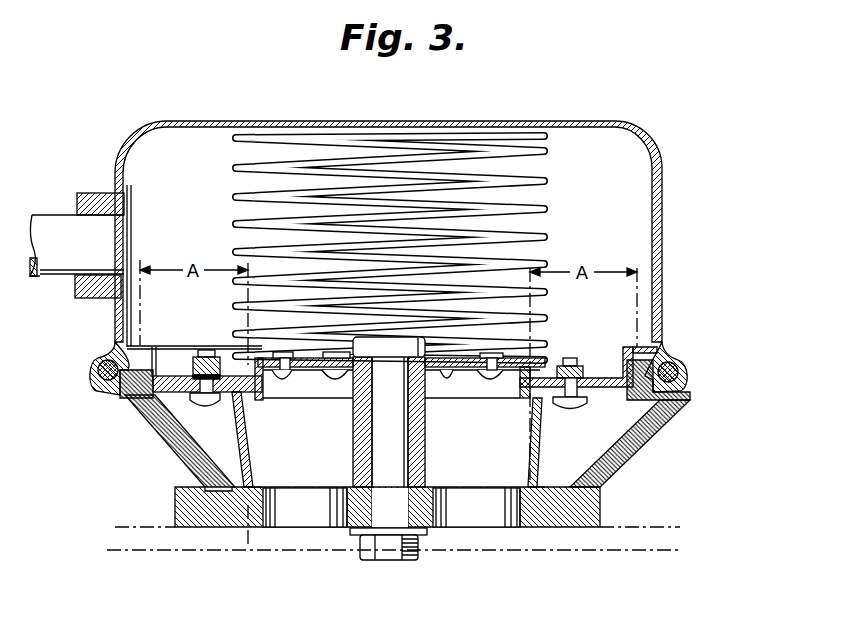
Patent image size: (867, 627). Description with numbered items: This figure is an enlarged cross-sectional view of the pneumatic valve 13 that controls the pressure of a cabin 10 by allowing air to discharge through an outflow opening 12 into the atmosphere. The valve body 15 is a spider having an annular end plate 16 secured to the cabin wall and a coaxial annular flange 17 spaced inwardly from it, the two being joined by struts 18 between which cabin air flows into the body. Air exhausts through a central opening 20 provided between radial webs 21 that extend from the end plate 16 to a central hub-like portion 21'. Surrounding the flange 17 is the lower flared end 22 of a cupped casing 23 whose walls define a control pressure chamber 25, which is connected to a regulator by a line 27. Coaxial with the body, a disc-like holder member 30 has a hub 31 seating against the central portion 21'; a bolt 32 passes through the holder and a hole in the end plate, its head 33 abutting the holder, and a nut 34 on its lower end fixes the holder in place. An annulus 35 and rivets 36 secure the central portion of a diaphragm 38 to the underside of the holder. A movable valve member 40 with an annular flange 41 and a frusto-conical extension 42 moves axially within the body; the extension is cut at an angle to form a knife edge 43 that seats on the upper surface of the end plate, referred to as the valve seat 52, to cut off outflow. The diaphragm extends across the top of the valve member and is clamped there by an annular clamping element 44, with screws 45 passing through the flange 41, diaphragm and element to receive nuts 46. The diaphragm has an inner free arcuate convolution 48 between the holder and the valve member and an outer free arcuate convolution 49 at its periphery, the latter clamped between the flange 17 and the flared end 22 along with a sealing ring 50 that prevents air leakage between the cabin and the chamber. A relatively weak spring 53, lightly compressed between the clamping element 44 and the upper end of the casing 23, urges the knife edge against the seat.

The cabin 10 is at (602, 552).
The outflow opening 12 is at (253, 538).
The valve 13 is at (168, 117).
The valve body 15 is at (662, 398).
The end plate 16 is at (598, 508).
The annular flange 17 is at (122, 389).
The struts 18 is at (166, 426).
The central opening 20 is at (520, 512).
The radial webs 21 is at (391, 535).
The central hub-like portion 21' is at (345, 535).
The flared end 22 is at (686, 372).
The cupped casing 23 is at (662, 249).
The control pressure chamber 25 is at (648, 190).
The line 27 is at (56, 276).
The holder member 30 is at (510, 360).
The hub 31 is at (421, 457).
The bolt 32 is at (378, 445).
The head 33 is at (384, 345).
The nut 34 is at (412, 554).
The annulus 35 is at (473, 380).
The rivets 36 is at (290, 376).
The diaphragm 38 is at (264, 392).
The movable valve member 40 is at (232, 443).
The annular flange 41 is at (582, 405).
The frusto-conical extension 42 is at (541, 454).
The knife edge 43 is at (528, 480).
The annular clamping element 44 is at (601, 377).
The screws 45 is at (207, 351).
The nuts 46 is at (192, 376).
The inner convolution 48 is at (532, 395).
The outer convolution 49 is at (640, 345).
The sealing ring 50 is at (100, 366).
The valve seat 52 is at (258, 486).
The spring 53 is at (548, 209).